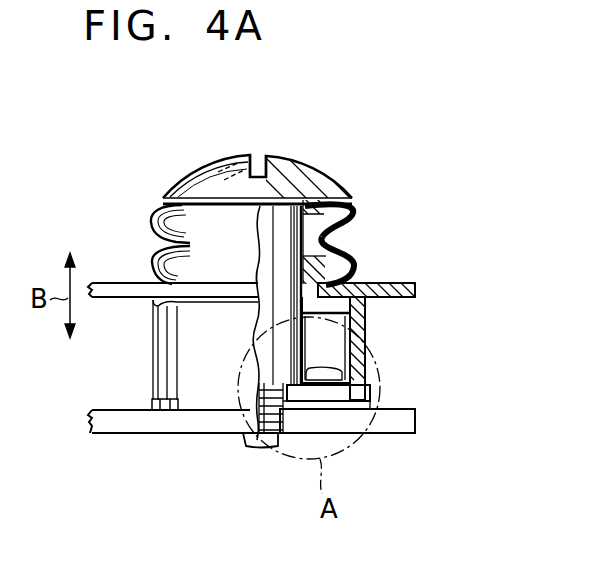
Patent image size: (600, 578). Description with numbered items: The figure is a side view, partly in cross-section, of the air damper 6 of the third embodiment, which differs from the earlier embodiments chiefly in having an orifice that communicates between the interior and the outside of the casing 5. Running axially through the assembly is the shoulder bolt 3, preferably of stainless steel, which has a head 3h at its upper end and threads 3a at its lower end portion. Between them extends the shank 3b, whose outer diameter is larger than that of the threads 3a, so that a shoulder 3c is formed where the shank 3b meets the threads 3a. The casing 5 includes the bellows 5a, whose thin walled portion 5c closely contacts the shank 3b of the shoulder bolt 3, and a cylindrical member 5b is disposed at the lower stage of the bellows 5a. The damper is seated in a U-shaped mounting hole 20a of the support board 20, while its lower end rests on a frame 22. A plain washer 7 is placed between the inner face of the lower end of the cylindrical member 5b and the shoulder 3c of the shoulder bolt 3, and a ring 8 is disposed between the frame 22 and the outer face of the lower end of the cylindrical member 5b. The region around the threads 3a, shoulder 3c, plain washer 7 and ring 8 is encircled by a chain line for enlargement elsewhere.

The shoulder bolt 3 is at (287, 157).
The head 3h is at (223, 162).
The shank 3b is at (270, 248).
The shoulder 3c is at (276, 380).
The threads 3a is at (263, 447).
The casing 5 is at (148, 263).
The bellows 5a is at (355, 226).
The cylindrical member 5b is at (367, 329).
The thin walled portion 5c is at (357, 206).
The air damper 6 is at (348, 166).
The plain washer 7 is at (370, 408).
The ring 8 is at (152, 405).
The support board 20 is at (400, 283).
The mounting hole 20a is at (366, 306).
The frame 22 is at (396, 434).